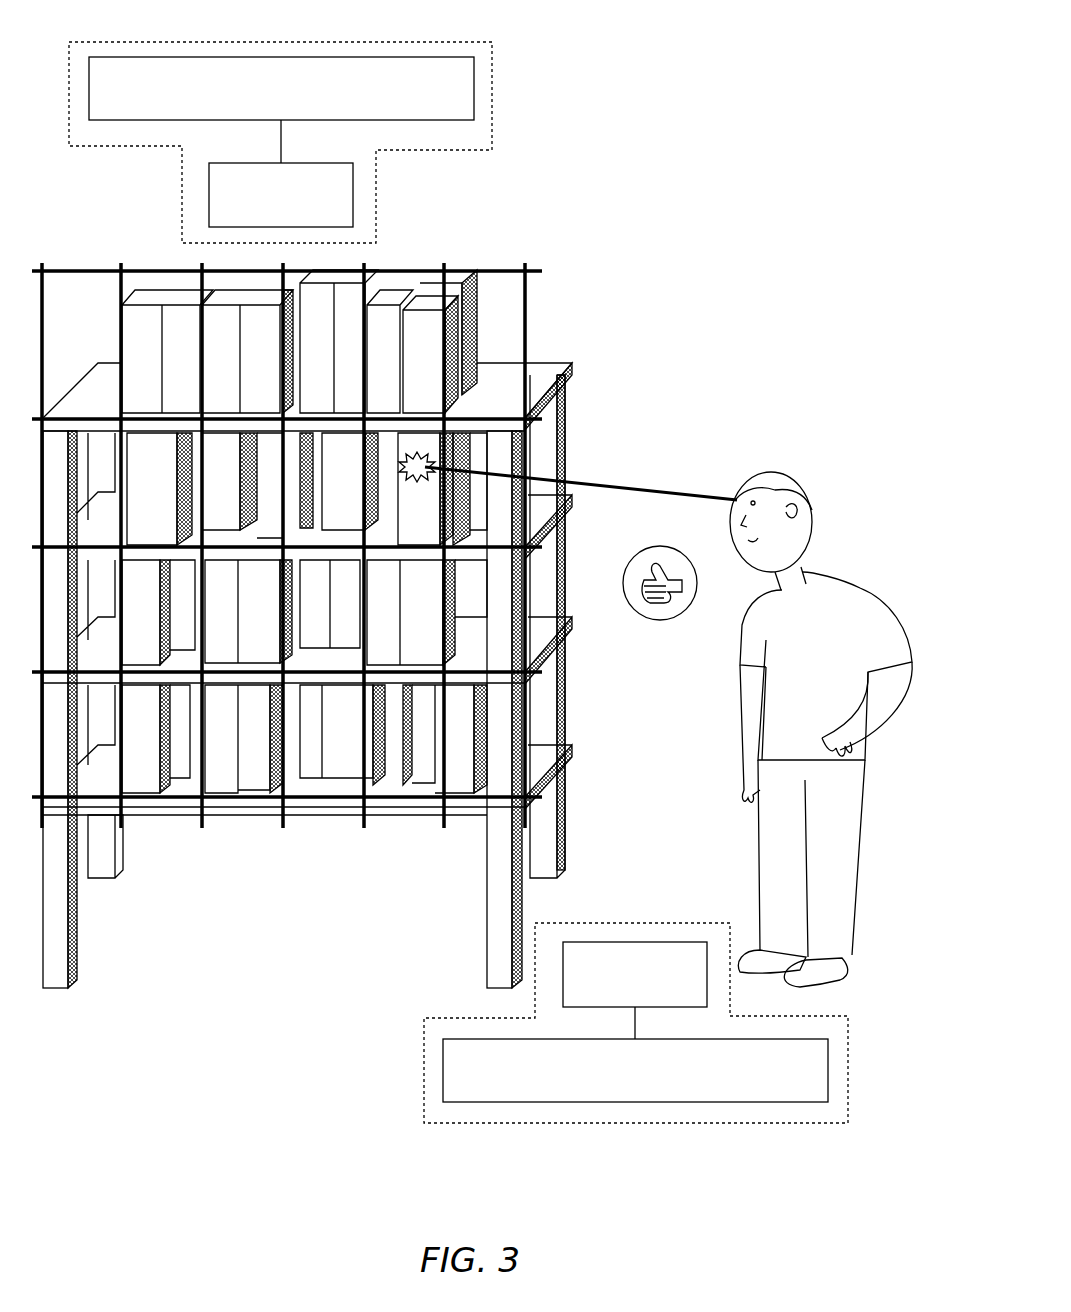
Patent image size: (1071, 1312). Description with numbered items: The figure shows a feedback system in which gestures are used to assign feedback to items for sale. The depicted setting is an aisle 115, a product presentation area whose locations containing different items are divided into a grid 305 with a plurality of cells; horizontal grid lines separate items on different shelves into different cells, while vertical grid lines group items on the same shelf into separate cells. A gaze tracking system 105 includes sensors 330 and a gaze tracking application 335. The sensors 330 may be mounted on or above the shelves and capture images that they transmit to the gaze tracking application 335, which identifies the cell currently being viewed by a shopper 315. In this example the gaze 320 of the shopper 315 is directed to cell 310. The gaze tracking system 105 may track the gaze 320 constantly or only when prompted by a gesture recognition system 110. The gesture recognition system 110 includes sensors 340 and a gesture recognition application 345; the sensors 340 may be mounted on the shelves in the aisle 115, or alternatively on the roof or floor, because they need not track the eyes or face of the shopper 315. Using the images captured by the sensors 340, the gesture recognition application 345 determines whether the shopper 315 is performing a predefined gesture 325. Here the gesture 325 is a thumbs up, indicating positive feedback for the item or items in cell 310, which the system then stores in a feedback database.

The gaze tracking system 105 is at (280, 123).
The gesture recognition system 110 is at (636, 1045).
The aisle 115 is at (555, 218).
The grid 305 is at (152, 268).
The cell 310 is at (420, 410).
The shopper 315 is at (775, 470).
The gaze 320 is at (602, 484).
The gesture 325 is at (660, 622).
The sensors 330 is at (262, 218).
The gaze tracking application 335 is at (262, 113).
The sensors 340 is at (616, 998).
The gesture recognition application 345 is at (812, 1095).